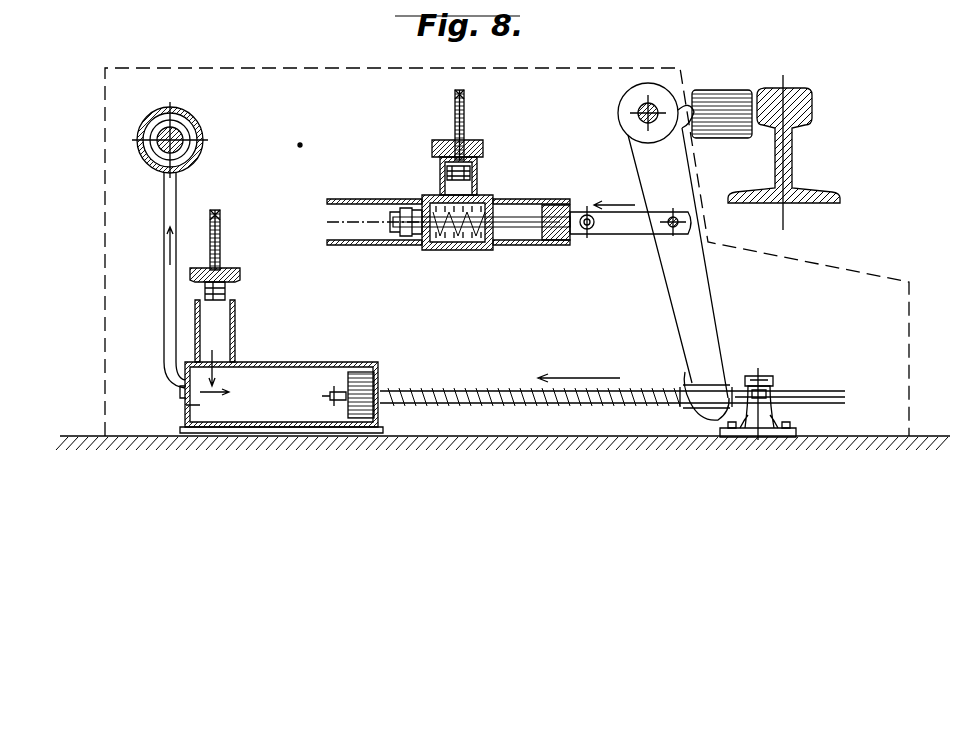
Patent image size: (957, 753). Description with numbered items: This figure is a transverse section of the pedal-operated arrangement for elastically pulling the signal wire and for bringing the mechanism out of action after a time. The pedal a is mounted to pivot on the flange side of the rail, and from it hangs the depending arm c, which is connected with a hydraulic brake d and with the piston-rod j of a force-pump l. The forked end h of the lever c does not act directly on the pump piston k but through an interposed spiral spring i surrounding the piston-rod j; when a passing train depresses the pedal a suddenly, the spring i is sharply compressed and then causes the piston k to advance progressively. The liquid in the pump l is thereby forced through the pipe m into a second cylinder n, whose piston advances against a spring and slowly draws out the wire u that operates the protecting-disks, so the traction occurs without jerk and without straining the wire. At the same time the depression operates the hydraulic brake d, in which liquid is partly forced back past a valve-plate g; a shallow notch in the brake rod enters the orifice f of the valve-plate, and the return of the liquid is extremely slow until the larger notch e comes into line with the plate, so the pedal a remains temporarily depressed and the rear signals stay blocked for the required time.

The pedal a is at (716, 92).
The pivot pin b is at (618, 113).
The depending arm c is at (662, 289).
The hydraulic brake d is at (436, 250).
The notch e is at (505, 242).
The orifice f is at (498, 208).
The valve-plate g is at (478, 246).
The forked end h is at (702, 412).
The spiral spring i is at (520, 389).
The piston-rod j is at (812, 392).
The piston k is at (370, 368).
The force-pump l is at (290, 366).
The pipe m is at (172, 262).
The second cylinder n is at (204, 150).
The wire u is at (302, 144).